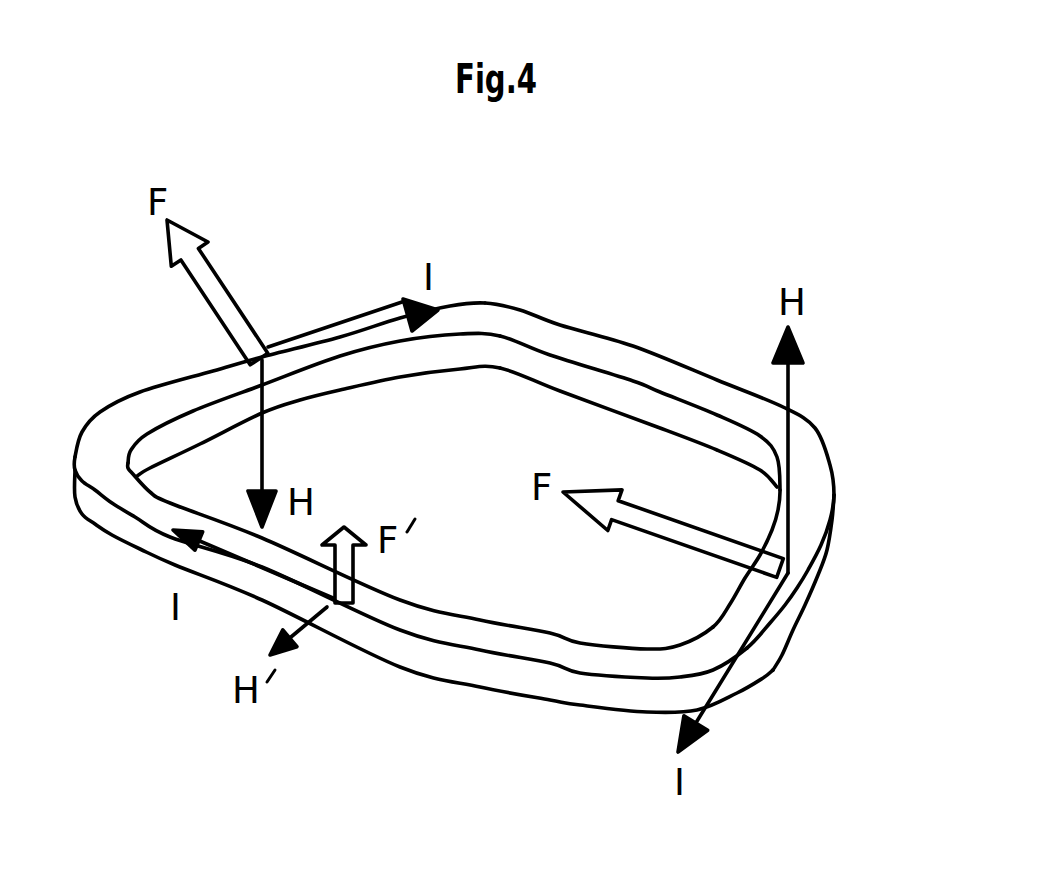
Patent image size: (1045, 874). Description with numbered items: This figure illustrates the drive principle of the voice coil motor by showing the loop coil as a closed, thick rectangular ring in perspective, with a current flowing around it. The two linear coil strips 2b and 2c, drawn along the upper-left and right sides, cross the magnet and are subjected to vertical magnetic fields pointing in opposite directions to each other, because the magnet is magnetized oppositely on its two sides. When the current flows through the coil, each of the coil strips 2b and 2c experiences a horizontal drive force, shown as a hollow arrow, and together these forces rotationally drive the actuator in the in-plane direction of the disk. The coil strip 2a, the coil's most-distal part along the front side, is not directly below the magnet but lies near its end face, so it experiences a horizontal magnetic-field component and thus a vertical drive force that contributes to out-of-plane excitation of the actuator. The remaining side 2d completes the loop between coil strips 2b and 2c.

The coil strip 2a is at (352, 633).
The linear coil strip 2b is at (220, 366).
The linear coil strip 2c is at (810, 586).
The coil side portion (top-right side of loop) 2d is at (634, 360).